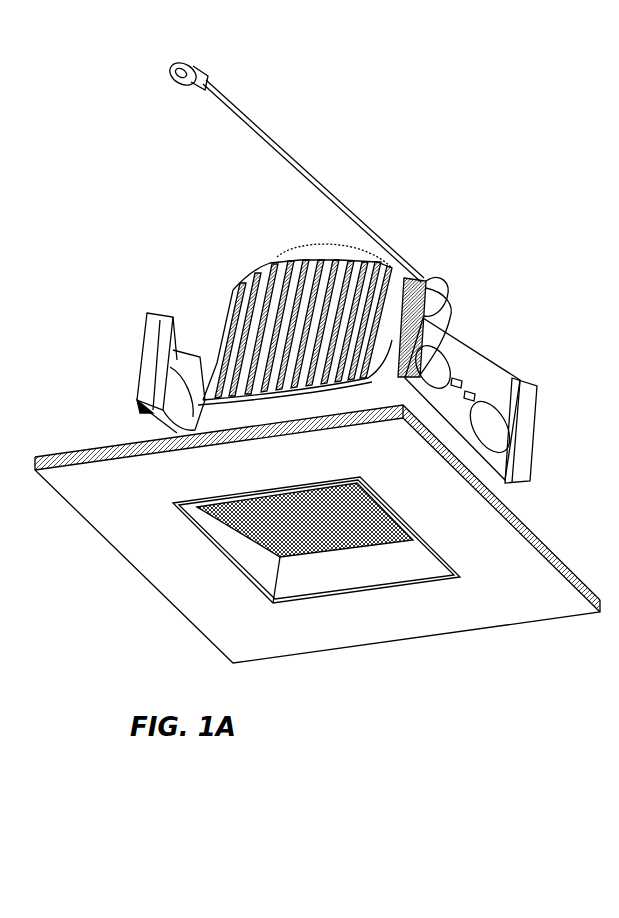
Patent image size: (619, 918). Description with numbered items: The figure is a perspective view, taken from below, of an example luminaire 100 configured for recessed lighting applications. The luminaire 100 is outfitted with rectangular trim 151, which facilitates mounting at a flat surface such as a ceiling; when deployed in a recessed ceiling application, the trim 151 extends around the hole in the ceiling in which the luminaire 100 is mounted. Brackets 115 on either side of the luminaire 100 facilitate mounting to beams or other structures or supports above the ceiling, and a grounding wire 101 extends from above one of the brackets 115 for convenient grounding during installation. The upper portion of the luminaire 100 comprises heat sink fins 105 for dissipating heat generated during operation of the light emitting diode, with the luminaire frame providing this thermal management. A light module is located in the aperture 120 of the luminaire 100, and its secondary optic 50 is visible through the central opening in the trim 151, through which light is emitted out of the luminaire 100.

The luminaire 100 is at (389, 105).
The grounding wire 101 is at (295, 158).
The heat sink fins 105 is at (236, 297).
The brackets 115 is at (150, 344).
The aperture 120 is at (380, 563).
The secondary optic 50 is at (320, 557).
The rectangular trim 151 is at (512, 599).